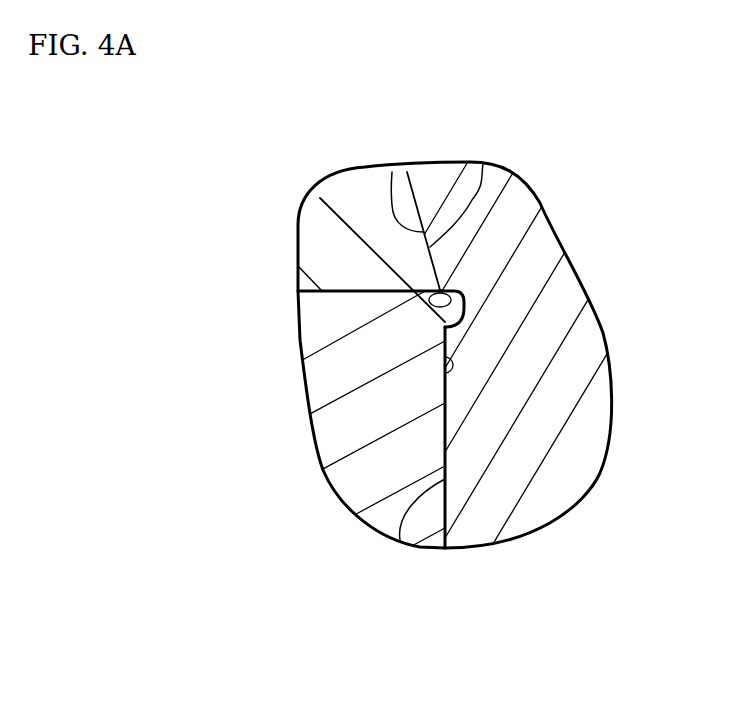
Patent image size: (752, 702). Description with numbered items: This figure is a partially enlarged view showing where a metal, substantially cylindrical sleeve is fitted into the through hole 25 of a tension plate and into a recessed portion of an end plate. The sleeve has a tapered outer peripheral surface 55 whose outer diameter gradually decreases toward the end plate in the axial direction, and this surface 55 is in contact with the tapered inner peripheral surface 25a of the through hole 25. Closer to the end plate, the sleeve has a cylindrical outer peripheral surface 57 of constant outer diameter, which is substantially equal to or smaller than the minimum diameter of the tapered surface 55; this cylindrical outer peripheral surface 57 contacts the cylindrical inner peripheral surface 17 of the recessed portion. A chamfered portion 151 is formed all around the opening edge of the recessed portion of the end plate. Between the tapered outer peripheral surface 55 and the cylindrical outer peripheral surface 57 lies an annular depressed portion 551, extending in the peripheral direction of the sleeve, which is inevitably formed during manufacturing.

The tapered outer peripheral surface 55 is at (392, 172).
The through hole 25 is at (417, 207).
The tapered inner peripheral surface 25a is at (483, 163).
The depressed portion 551 is at (464, 303).
The chamfered portion 151 is at (422, 292).
The cylindrical inner peripheral surface 17 is at (443, 362).
The cylindrical outer peripheral surface 57 is at (400, 540).